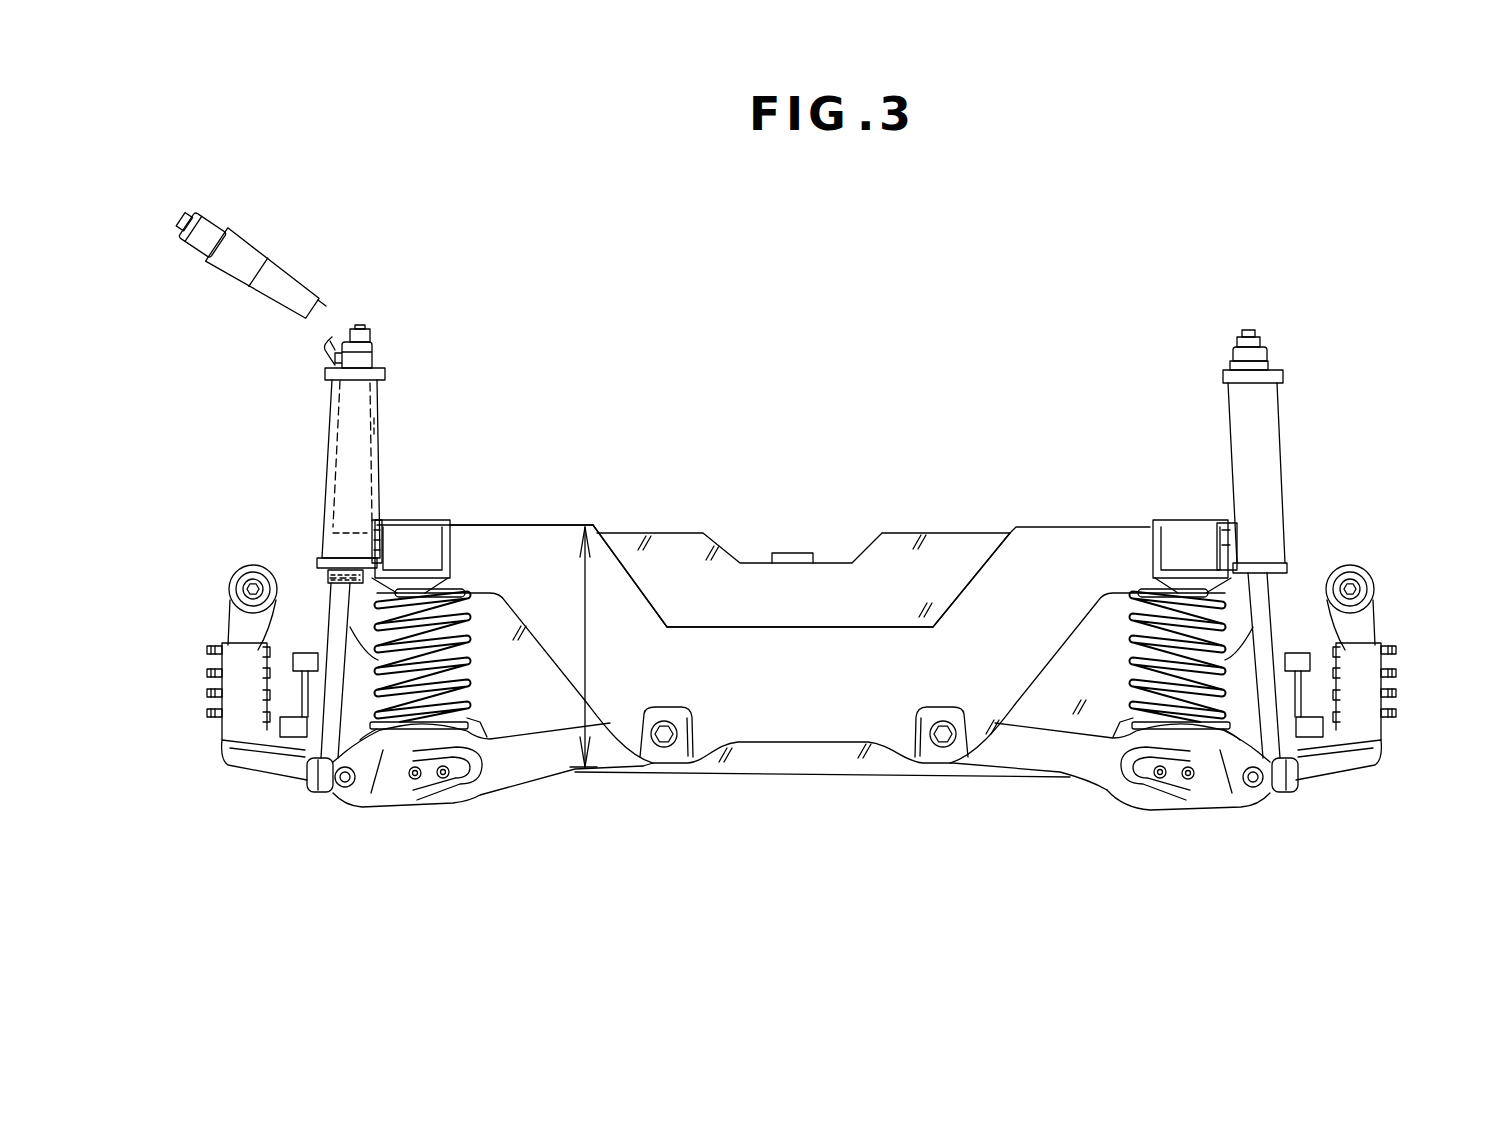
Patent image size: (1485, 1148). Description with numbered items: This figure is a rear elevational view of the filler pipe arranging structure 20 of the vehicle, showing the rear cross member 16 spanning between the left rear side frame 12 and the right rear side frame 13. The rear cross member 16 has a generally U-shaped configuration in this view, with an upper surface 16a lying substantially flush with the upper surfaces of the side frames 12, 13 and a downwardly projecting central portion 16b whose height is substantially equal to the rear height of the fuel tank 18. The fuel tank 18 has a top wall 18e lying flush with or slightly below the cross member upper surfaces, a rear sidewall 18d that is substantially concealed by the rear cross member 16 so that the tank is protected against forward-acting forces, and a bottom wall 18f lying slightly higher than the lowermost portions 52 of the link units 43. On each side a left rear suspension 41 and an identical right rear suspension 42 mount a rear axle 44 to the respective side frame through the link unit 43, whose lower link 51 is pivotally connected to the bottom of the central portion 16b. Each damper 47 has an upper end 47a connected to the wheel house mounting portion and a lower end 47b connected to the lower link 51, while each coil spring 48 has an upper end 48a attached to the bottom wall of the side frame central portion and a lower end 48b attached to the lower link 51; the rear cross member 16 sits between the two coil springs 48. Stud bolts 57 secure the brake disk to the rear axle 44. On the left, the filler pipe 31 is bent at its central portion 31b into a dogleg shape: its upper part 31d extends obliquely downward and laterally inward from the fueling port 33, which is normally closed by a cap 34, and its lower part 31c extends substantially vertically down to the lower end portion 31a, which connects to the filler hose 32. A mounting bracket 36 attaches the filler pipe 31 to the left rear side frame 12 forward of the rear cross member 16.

The left rear side frame 12 is at (440, 540).
The right rear side frame 13 is at (1158, 540).
The rear cross member 16 is at (1042, 530).
The upper surface 16a is at (575, 530).
The downwardly projecting central portion 16b is at (840, 722).
The fuel tank 18 is at (947, 527).
The rear sidewall 18d is at (830, 556).
The top wall 18e is at (677, 531).
The bottom wall 18f is at (795, 778).
The filler pipe arranging structure 20 is at (437, 245).
The filler pipe 31 is at (347, 315).
The lower end portion 31a is at (327, 578).
The central portion 31b is at (330, 341).
The lower part 31c is at (380, 425).
The upper part 31d is at (322, 296).
The filler hose 32 is at (323, 626).
The fueling port 33 is at (250, 235).
The cap 34 is at (233, 222).
The mounting bracket 36 is at (340, 550).
The left rear suspension 41 is at (327, 437).
The right rear suspension 42 is at (1287, 447).
The link unit 43 is at (503, 792).
The rear axle 44 is at (227, 693).
The damper 47 is at (330, 493).
The upper end of damper 47a is at (380, 352).
The lower end of damper 47b is at (307, 783).
The coil spring 48 is at (470, 684).
The upper end of coil spring 48a is at (468, 588).
The lower end of coil spring 48b is at (480, 737).
The lower link 51 is at (473, 790).
The lowermost portion of link unit 52 is at (353, 807).
The stud bolts 57 is at (203, 677).